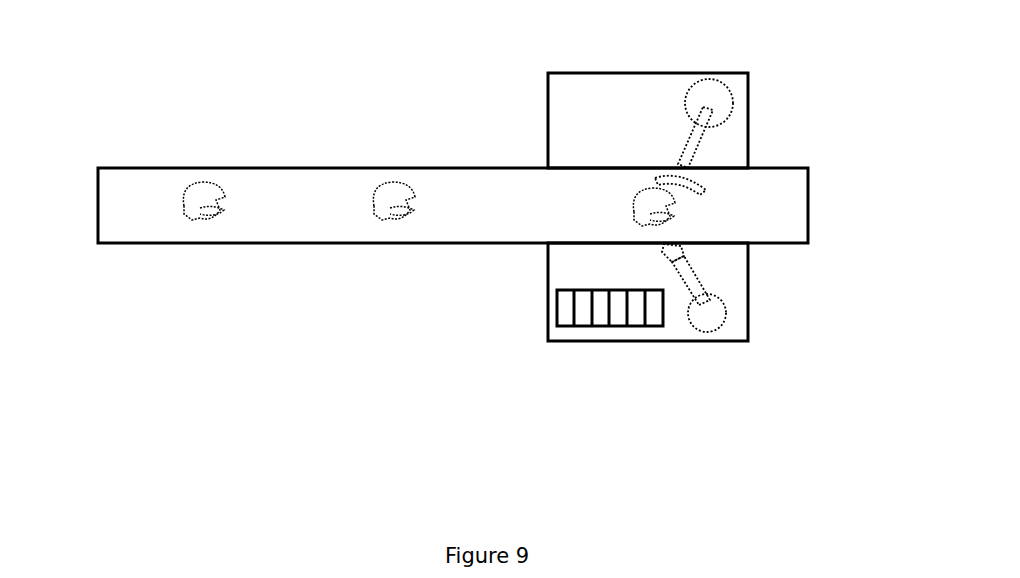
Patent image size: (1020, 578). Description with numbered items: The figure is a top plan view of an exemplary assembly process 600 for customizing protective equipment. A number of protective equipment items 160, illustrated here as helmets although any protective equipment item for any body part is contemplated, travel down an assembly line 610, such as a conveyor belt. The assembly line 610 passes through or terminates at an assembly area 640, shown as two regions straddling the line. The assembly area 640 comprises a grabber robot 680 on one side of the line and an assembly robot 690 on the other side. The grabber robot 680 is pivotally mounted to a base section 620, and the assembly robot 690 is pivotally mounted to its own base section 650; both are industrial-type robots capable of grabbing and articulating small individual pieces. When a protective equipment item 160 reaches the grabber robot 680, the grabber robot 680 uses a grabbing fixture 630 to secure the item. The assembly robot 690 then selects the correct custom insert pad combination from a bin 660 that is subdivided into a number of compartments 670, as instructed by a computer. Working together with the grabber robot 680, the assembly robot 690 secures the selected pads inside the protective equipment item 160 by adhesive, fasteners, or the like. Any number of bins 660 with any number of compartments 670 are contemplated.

The helmet inspection system 600 is at (116, 97).
The assembly line 610 is at (108, 232).
The protective equipment item 160 is at (230, 184).
The base section 620 is at (729, 98).
The grabbing fixture 630 is at (708, 180).
The assembly area 640 is at (750, 265).
The base section 650 is at (718, 316).
The bin 660 is at (663, 258).
The compartments 670 is at (602, 315).
The grabber robot 680 is at (670, 126).
The assembly robot 690 is at (710, 272).